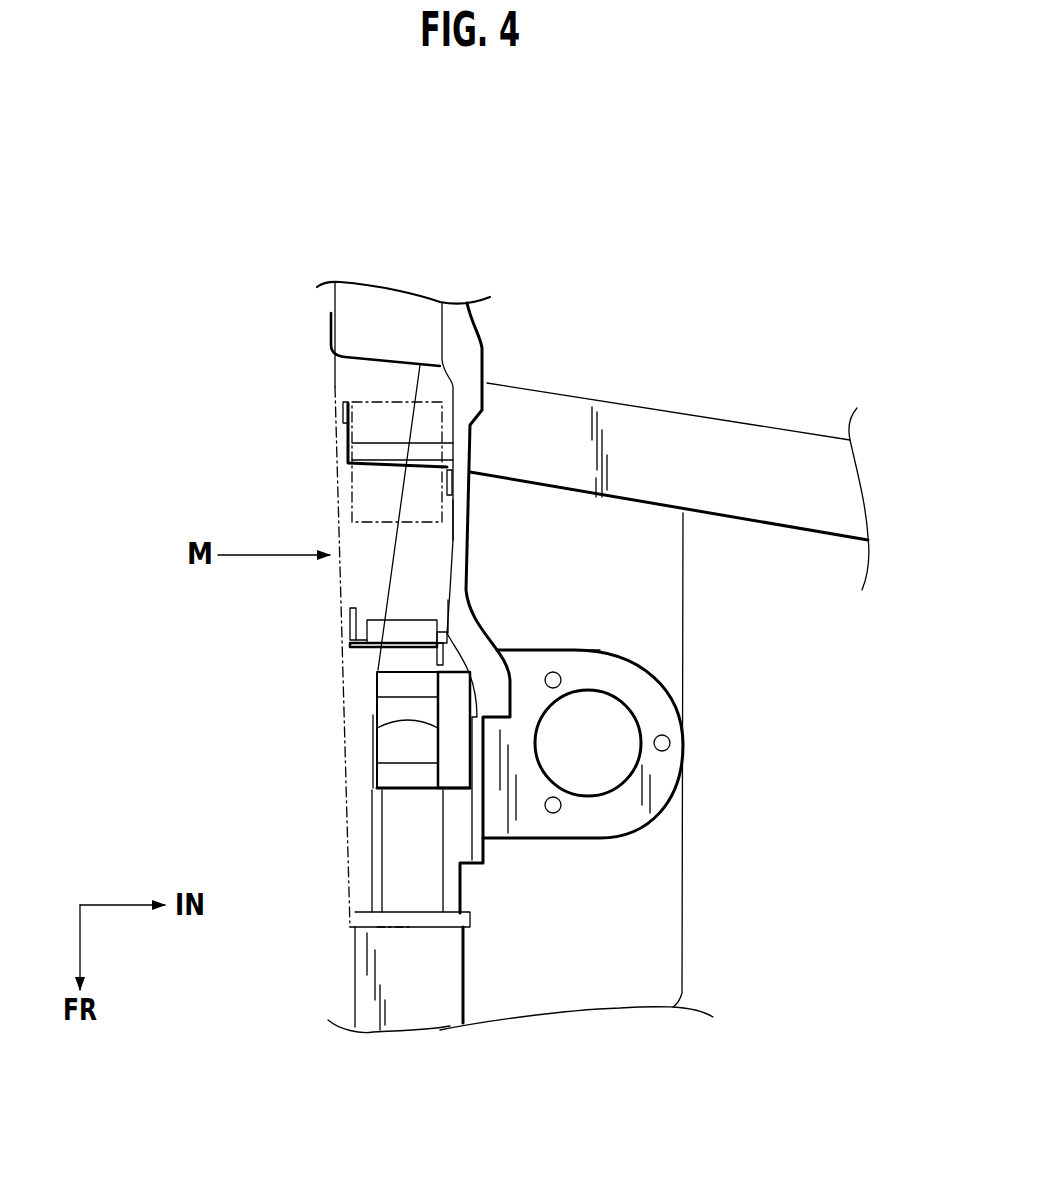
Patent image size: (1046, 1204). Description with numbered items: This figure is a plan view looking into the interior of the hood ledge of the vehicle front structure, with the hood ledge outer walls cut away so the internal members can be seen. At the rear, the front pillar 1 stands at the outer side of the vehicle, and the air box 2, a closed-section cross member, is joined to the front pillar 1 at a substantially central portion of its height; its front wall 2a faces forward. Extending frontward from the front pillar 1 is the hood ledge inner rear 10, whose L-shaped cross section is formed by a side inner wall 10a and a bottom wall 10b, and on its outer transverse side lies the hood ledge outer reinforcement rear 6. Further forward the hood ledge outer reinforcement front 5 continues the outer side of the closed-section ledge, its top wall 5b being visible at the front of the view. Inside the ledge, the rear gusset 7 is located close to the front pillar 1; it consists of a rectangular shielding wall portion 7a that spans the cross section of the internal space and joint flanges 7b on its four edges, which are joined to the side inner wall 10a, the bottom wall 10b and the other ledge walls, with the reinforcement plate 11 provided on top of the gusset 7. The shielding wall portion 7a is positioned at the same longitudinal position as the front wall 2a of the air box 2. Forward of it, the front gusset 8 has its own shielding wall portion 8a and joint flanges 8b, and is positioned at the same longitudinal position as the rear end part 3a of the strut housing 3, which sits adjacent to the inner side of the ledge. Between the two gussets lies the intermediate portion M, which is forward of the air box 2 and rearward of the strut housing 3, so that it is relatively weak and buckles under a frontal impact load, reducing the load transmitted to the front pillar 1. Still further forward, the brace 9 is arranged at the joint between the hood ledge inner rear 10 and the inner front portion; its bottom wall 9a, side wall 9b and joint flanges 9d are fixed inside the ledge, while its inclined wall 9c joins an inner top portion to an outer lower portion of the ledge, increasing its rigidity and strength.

The front pillar 1 is at (330, 301).
The air box 2 is at (757, 427).
The front wall of the air box 2a is at (760, 527).
The strut housing 3 is at (668, 680).
The rear end part of the strut housing 3a is at (588, 650).
The hood ledge outer reinforcement front 5 is at (350, 963).
The top wall 5b is at (443, 977).
The hood ledge outer reinforcement rear 6 is at (344, 852).
The rear gusset 7 is at (337, 412).
The shielding wall portion 7a is at (380, 455).
The joint flanges 7b is at (343, 430).
The front gusset 8 is at (347, 612).
The shielding wall portion 8a is at (358, 640).
The joint flanges 8b is at (352, 623).
The brace 9 is at (373, 703).
The bottom wall 9a is at (387, 684).
The side wall 9b is at (377, 728).
The inclined wall 9c is at (387, 753).
The joint flanges 9d is at (463, 767).
The hood ledge inner rear 10 is at (470, 556).
The side inner wall 10a is at (456, 544).
The bottom wall 10b is at (432, 593).
The reinforcement plate 11 is at (445, 412).